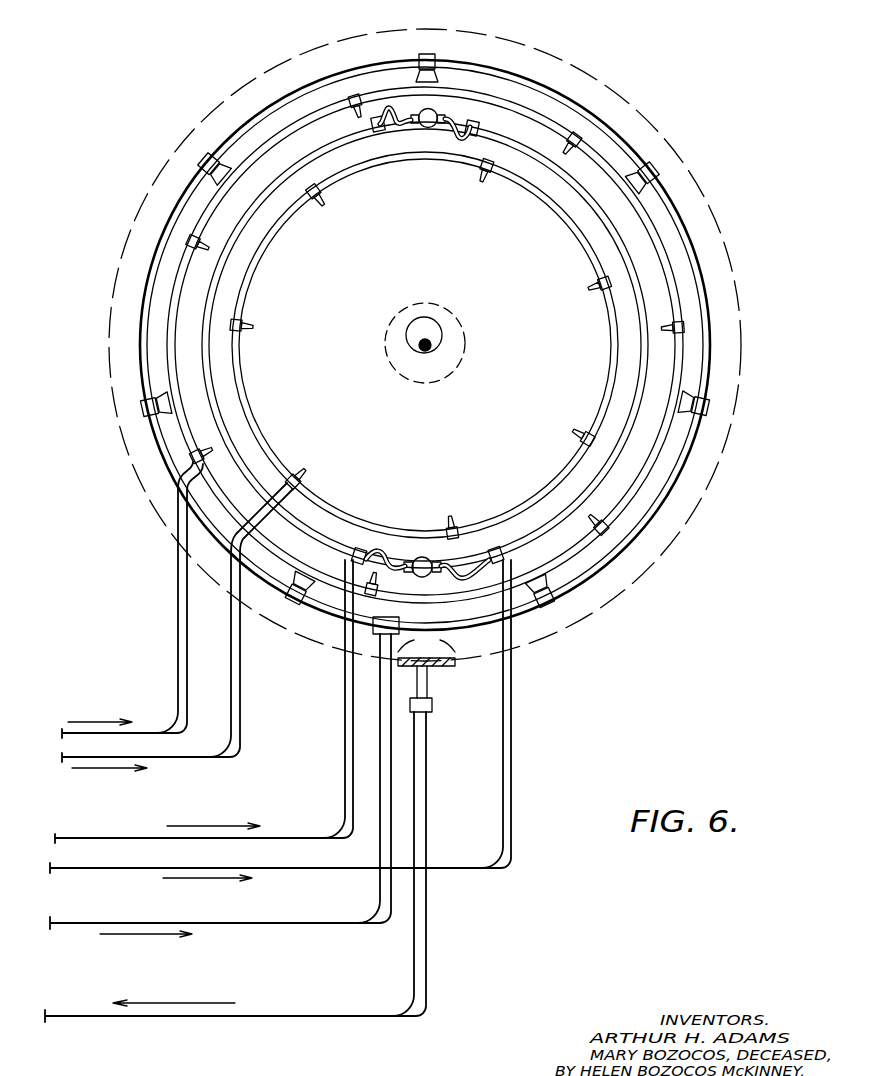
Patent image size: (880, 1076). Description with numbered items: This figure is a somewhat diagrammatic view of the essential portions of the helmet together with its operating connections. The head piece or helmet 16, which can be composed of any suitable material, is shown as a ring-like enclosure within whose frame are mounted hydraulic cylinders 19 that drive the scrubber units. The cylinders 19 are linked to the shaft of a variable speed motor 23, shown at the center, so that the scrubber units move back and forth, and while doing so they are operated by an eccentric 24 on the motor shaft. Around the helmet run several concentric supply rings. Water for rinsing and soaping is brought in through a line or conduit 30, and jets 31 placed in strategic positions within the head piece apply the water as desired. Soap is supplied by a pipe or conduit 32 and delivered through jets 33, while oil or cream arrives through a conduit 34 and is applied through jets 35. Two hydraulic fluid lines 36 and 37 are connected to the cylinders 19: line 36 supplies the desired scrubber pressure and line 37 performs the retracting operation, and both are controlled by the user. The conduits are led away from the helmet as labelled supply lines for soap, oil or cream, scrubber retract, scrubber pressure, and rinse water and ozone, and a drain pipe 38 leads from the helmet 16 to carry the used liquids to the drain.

The head piece or helmet 16 is at (632, 97).
The hydraulic cylinders 19 is at (426, 128).
The variable speed motor 23 is at (466, 372).
The eccentric 24 is at (431, 334).
The line or conduit 30 is at (701, 250).
The jets 31 is at (214, 156).
The pipe or conduit 32 is at (288, 124).
The jets 33 is at (352, 112).
The conduit 34 is at (618, 334).
The jets 35 is at (484, 176).
The hydraulic fluid line 36 is at (459, 126).
The hydraulic fluid line 37 is at (395, 124).
The drain pipe 38 is at (430, 762).